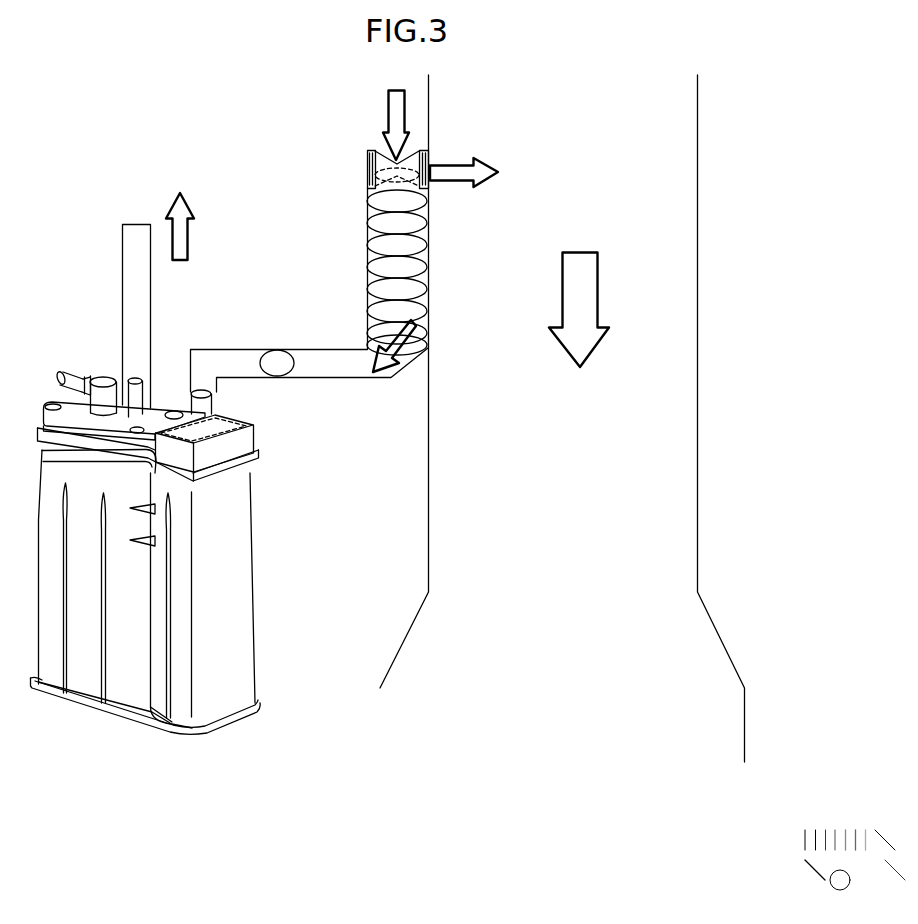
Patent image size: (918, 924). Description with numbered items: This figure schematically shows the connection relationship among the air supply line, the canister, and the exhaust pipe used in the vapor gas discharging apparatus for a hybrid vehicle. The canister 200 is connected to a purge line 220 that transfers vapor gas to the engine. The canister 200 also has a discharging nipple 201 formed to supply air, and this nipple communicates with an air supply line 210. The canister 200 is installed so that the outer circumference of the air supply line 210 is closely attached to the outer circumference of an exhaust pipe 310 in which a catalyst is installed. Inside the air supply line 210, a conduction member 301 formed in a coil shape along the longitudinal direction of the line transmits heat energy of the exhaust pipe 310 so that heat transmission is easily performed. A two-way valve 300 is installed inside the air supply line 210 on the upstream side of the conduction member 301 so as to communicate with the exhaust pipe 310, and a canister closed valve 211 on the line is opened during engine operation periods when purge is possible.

The canister 200 is at (233, 547).
The discharging nipple 201 is at (200, 391).
The air supply line 210 is at (350, 380).
The canister closed valve (CCV) 211 is at (281, 366).
The purge line 220 is at (122, 315).
The two-way valve 300 is at (367, 157).
The conduction member 301 is at (402, 223).
The exhaust pipe 310 is at (698, 333).